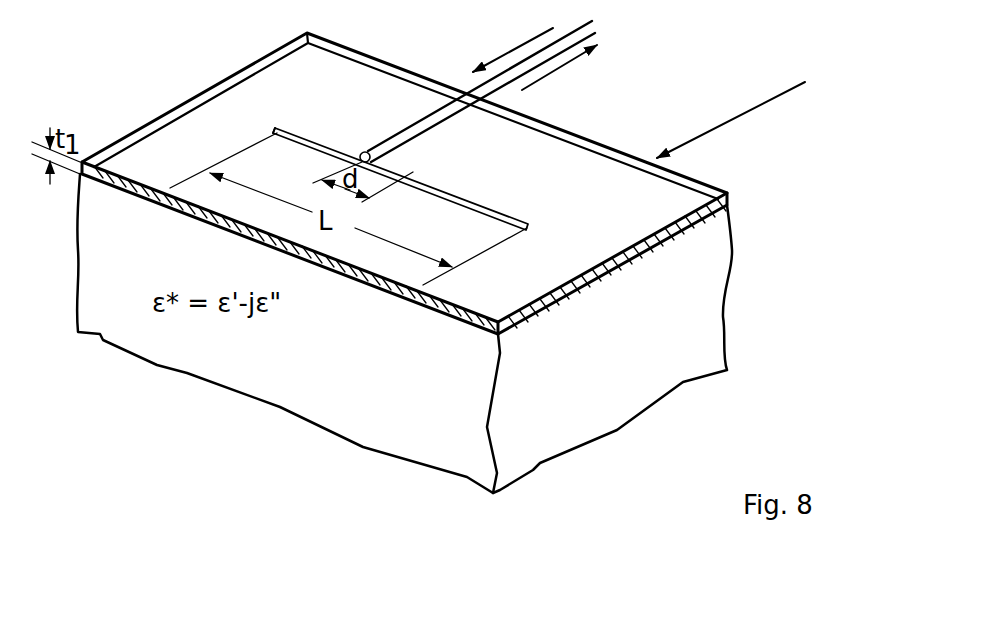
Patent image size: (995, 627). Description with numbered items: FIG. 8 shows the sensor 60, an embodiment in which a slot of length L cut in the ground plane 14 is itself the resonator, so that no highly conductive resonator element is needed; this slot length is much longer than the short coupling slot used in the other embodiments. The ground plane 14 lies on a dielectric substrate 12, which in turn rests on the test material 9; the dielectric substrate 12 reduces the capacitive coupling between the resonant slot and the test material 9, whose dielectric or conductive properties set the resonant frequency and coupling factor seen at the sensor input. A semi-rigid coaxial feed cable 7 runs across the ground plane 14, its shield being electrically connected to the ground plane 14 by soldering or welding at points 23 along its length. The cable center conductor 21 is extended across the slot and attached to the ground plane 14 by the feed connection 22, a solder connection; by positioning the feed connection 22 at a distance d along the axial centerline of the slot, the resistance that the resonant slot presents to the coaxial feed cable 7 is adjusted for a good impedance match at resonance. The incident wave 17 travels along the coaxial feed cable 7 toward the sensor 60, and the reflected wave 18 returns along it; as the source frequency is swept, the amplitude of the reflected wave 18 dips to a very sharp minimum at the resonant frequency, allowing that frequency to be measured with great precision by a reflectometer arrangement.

The coaxial feed cable 7 is at (586, 35).
The test material 9 is at (645, 342).
The dielectric substrate 12 is at (637, 260).
The ground plane 14 is at (530, 222).
The incident wave 17 is at (513, 44).
The reflected wave 18 is at (559, 72).
The cable center conductor 21 is at (360, 153).
The feed connection 22 is at (276, 130).
The solder or weld points 23 is at (460, 116).
The sensor 60 is at (727, 193).